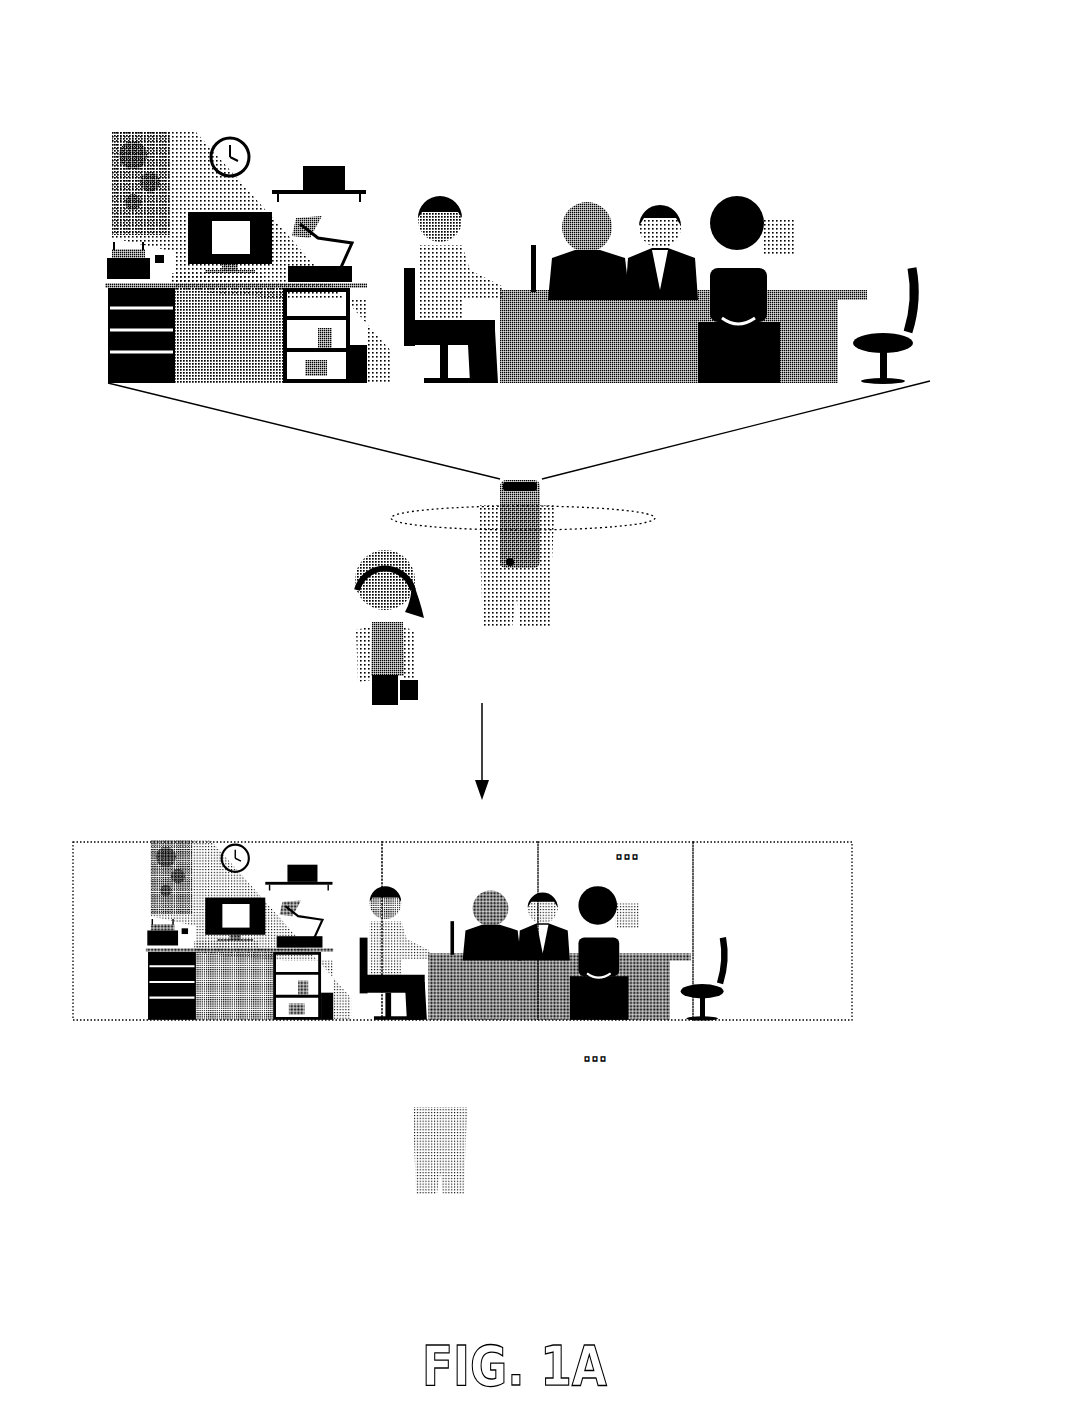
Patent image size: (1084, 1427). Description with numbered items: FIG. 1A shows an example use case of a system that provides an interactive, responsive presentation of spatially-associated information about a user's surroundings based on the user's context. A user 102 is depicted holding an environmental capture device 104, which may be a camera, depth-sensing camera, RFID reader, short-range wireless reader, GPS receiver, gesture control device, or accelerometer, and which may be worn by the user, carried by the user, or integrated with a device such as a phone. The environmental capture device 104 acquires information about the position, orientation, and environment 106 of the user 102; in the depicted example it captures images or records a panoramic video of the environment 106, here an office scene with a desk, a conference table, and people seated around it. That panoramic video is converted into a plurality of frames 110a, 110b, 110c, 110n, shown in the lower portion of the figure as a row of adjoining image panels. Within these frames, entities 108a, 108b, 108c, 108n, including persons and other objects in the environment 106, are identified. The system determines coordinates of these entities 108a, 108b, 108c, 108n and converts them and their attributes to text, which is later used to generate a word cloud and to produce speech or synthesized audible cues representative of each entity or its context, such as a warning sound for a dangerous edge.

The user 102 is at (355, 556).
The environmental capture device 104 is at (542, 556).
The environment 106 is at (872, 78).
The entity 108a is at (152, 925).
The entity 108b is at (453, 925).
The entity 108c is at (550, 900).
The entity 108n is at (727, 938).
The frame 110a is at (118, 1022).
The frame 110b is at (268, 1022).
The frame 110c is at (433, 1022).
The frame 110n is at (745, 1022).